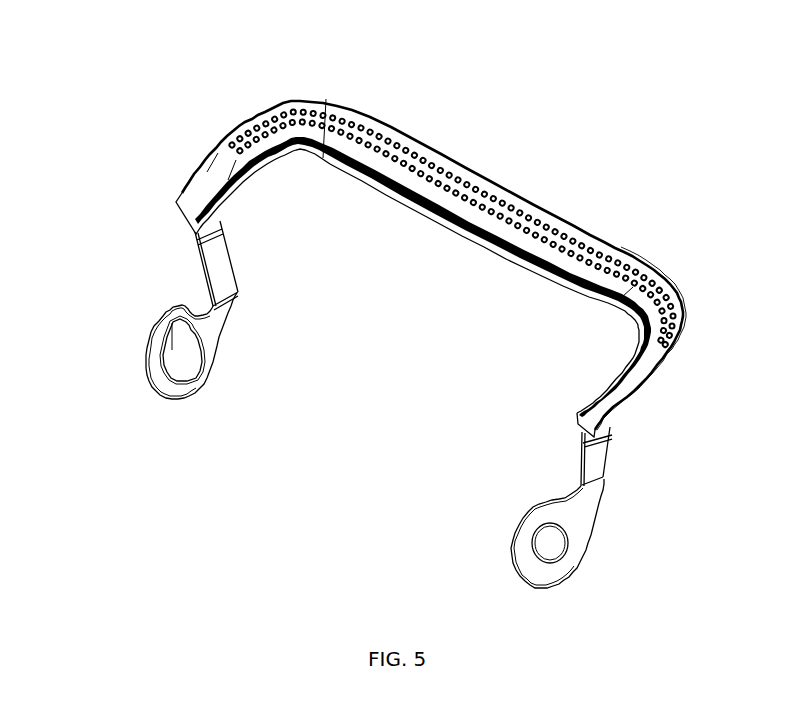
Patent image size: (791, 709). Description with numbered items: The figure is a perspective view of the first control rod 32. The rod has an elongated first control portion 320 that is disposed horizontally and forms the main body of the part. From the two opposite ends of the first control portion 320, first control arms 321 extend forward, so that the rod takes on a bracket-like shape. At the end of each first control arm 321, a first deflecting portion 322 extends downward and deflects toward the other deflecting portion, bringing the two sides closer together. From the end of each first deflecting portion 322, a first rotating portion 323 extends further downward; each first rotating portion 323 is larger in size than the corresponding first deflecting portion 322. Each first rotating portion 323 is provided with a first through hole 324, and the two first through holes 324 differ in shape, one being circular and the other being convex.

The first control rod 32 is at (321, 98).
The first control portion 320 is at (485, 176).
The first control arm 321 is at (208, 157).
The first deflecting portion 322 is at (207, 265).
The first rotating portion 323 is at (207, 306).
The first through hole 324 is at (178, 352).